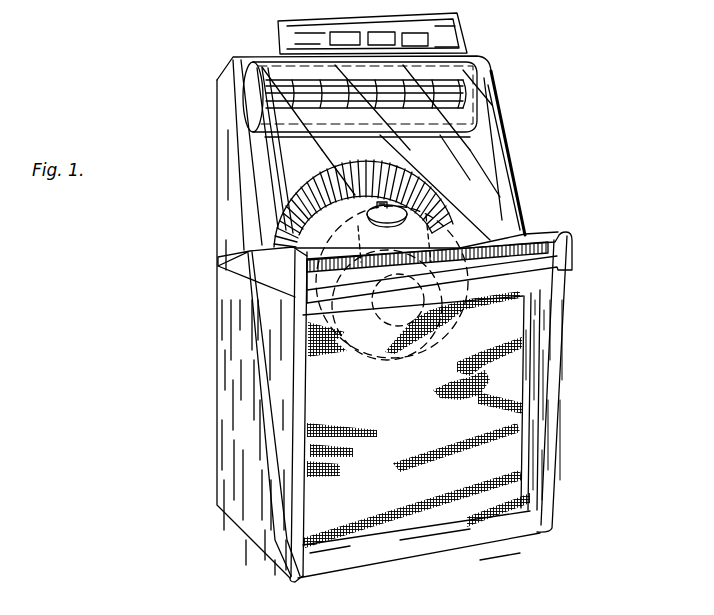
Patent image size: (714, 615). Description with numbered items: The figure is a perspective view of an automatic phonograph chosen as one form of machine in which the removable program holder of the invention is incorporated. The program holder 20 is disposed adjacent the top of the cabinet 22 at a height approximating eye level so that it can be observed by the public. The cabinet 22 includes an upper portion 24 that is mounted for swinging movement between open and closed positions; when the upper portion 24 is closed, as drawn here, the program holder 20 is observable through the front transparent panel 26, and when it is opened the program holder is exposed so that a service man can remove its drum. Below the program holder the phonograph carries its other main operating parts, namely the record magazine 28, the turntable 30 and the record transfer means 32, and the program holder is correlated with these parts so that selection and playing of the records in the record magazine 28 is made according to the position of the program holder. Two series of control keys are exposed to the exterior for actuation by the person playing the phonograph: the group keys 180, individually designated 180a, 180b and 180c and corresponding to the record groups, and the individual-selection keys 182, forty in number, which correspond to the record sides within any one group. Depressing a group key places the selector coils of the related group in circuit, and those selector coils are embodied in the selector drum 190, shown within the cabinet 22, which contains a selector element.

The program holder 20 is at (455, 93).
The cabinet 22 is at (217, 366).
The upper portion 24 is at (238, 180).
The front transparent panel 26 is at (515, 188).
The record magazine 28 is at (276, 227).
The turntable 30 is at (412, 212).
The record transfer means 32 is at (376, 162).
The group keys 180 is at (450, 45).
The group key 180a is at (330, 37).
The group key 180b is at (386, 34).
The group key 180c is at (430, 38).
The individual-selection keys 182 is at (532, 243).
The selector drum 190 is at (369, 328).